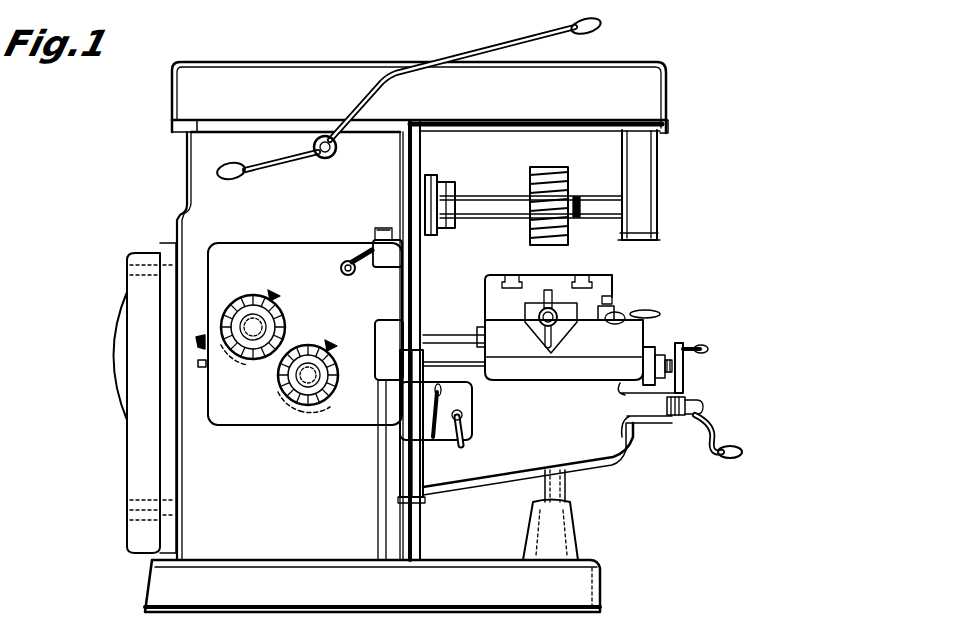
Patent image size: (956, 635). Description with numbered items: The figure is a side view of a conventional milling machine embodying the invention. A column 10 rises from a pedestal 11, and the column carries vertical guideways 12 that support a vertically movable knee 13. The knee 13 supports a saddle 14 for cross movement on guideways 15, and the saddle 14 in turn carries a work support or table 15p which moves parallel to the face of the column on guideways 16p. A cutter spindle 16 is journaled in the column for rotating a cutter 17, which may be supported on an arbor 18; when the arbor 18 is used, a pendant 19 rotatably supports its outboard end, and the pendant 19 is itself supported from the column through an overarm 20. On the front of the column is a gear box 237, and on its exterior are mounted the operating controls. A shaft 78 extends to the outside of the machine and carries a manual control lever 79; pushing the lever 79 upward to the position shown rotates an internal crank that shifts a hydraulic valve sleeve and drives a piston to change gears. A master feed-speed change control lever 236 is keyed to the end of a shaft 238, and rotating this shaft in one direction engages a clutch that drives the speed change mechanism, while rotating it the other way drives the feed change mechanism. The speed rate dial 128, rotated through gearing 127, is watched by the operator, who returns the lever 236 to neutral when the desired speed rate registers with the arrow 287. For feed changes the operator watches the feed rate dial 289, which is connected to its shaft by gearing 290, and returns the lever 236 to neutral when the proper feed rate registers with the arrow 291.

The column 10 is at (186, 178).
The pedestal 11 is at (600, 586).
The vertical guideways 12 is at (425, 265).
The knee 13 is at (628, 457).
The saddle 14 is at (630, 338).
The guideways 15 is at (437, 357).
The work support or table 15p is at (607, 290).
The cutter spindle 16 is at (432, 180).
The guideways 16p is at (600, 318).
The cutter 17 is at (566, 170).
The arbor 18 is at (590, 205).
The pendant 19 is at (640, 168).
The overarm 20 is at (667, 97).
The shaft 78 is at (327, 142).
The manual control lever 79 is at (534, 38).
The gearing 127 is at (292, 412).
The speed rate dial 128 is at (325, 408).
The master feed-speed change control lever 236 is at (196, 342).
The gear box 237 is at (357, 245).
The shaft 238 is at (198, 363).
The arrow 287 is at (337, 346).
The feed rate dial 289 is at (245, 300).
The gearing 290 is at (247, 357).
The arrow 291 is at (280, 296).